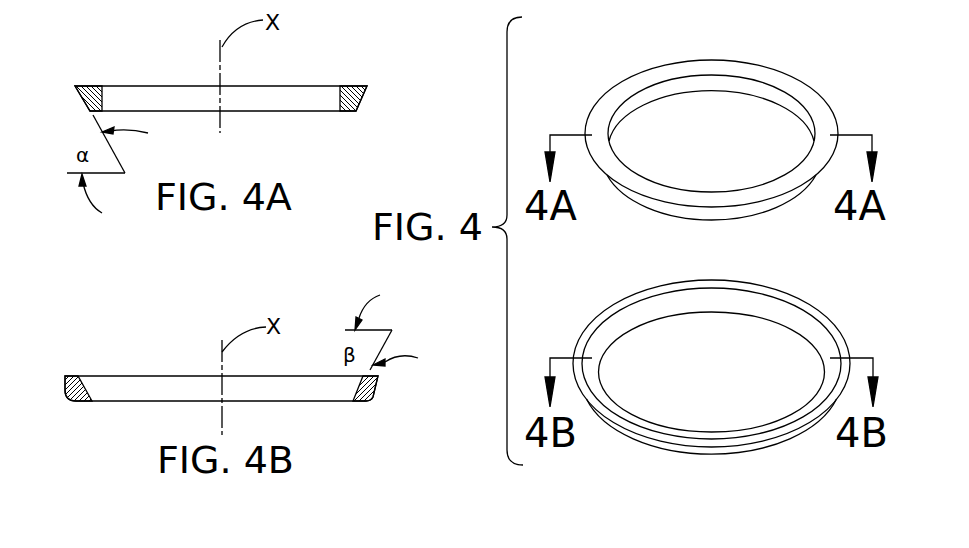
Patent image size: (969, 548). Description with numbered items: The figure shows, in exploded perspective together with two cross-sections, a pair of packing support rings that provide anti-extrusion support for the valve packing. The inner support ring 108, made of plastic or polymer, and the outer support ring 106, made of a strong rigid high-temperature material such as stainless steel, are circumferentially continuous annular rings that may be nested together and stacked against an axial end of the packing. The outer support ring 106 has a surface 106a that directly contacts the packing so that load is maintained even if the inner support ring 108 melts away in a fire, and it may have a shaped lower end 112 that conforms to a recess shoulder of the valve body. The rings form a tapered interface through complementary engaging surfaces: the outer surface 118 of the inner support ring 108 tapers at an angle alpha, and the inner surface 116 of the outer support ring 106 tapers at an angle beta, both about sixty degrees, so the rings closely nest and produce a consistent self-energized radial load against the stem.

In FIG. 4, the outer support ring 106 is at (696, 361).
In FIG. 4, the surface 106a is at (722, 283).
In FIG. 4A, the inner support ring 108 is at (350, 85).
In FIG. 4, the inner support ring 108 is at (726, 136).
In FIG. 4B, the lower end 112 is at (372, 401).
In FIG. 4, the lower end 112 is at (753, 447).
In FIG. 4, the inner surface 116 is at (792, 323).
In FIG. 4, the outer surface 118 is at (658, 207).